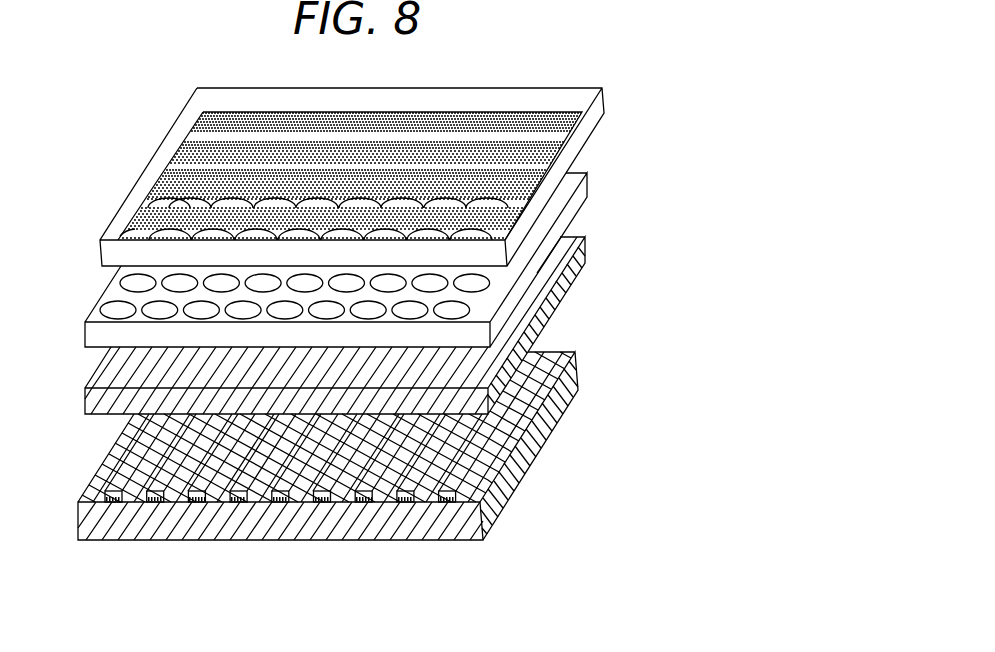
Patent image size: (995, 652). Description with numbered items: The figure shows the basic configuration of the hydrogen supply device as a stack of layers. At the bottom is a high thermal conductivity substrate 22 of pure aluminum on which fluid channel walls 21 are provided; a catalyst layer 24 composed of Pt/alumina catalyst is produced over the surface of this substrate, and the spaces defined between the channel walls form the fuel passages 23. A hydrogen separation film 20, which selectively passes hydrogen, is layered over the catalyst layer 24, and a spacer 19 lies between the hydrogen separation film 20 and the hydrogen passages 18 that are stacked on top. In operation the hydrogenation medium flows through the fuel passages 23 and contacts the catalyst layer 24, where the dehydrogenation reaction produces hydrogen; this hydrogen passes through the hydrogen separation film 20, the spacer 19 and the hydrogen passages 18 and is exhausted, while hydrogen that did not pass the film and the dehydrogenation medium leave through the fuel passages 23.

The hydrogen passages 18 is at (562, 150).
The spacer 19 is at (530, 248).
The hydrogen separation film 20 is at (557, 317).
The fluid channel walls 21 is at (443, 502).
The high thermal conductivity substrate 22 is at (353, 540).
The fuel passages 23 is at (258, 502).
The catalyst layer 24 is at (213, 453).